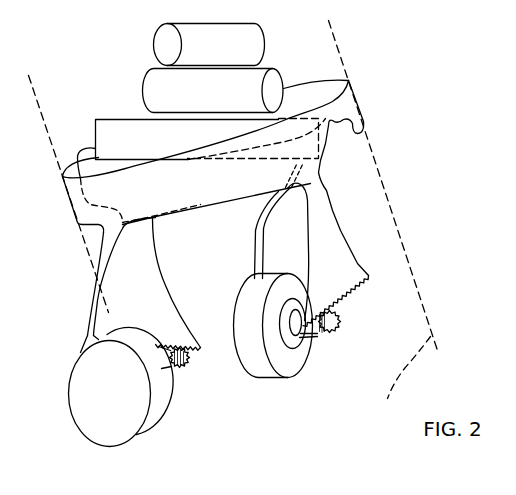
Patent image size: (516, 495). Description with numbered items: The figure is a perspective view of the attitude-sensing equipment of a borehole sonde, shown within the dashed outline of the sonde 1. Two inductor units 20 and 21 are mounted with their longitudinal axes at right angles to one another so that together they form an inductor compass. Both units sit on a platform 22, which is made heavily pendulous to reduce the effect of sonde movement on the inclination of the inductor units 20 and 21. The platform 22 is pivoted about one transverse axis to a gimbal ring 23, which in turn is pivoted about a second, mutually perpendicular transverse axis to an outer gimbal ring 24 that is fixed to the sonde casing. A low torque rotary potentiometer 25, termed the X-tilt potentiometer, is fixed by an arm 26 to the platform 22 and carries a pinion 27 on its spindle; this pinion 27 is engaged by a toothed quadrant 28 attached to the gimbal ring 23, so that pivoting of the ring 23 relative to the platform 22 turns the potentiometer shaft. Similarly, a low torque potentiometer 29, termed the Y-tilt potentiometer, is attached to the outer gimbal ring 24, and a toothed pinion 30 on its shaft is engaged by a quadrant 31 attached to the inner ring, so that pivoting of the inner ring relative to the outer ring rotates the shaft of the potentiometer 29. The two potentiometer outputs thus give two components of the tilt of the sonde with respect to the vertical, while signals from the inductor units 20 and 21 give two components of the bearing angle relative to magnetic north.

The apparatus housing outline 1 is at (233, 222).
The inductor unit 20 is at (209, 45).
The inductor unit 21 is at (213, 91).
The platform 22 is at (115, 123).
The gimbal ring 23 is at (83, 143).
The gimbal ring 24 is at (218, 187).
The rotary potentiometer 25 is at (257, 350).
The arm 26 is at (255, 250).
The pinion 27 is at (341, 323).
The toothed quadrant 28 is at (332, 272).
The potentiometer 29 is at (117, 417).
The toothed pinion 30 is at (187, 367).
The quadrant 31 is at (143, 285).